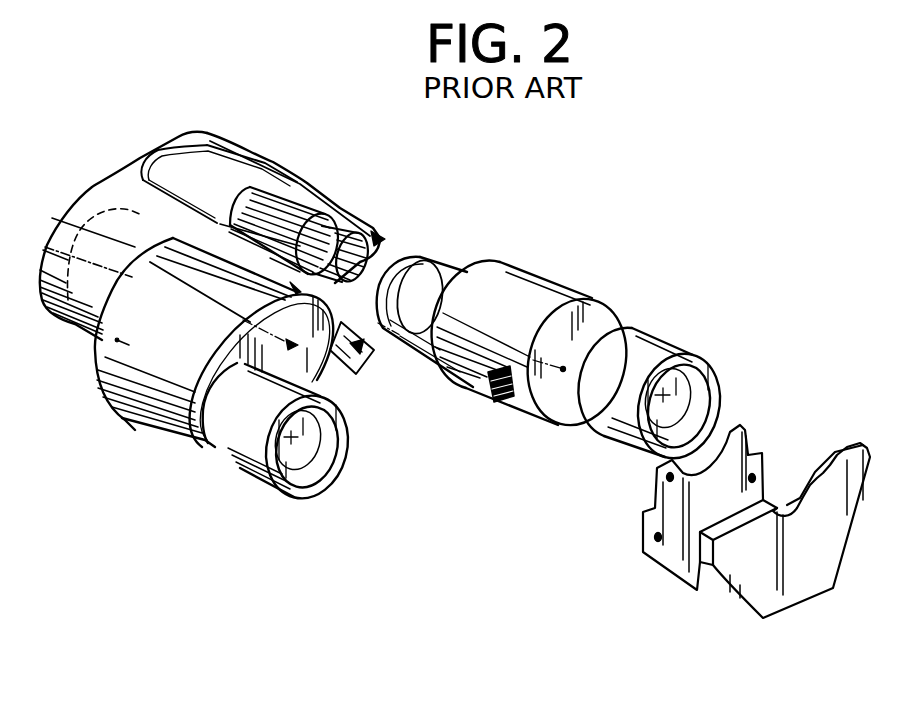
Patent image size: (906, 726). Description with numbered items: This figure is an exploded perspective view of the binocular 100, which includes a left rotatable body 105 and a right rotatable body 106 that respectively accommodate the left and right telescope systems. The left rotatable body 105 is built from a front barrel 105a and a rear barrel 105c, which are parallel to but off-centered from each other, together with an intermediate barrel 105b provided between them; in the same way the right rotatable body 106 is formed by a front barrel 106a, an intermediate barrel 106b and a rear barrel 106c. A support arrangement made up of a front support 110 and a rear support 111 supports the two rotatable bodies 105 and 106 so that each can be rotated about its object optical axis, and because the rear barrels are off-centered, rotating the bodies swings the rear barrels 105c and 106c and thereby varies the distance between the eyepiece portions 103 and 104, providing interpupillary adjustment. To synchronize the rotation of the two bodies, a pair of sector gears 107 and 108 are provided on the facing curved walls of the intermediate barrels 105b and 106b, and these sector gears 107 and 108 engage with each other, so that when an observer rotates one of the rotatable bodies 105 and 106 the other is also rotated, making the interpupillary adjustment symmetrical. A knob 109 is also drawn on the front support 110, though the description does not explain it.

The binocular 100 is at (347, 558).
The eyepiece portion 103 is at (311, 463).
The eyepiece portion 104 is at (691, 338).
The left rotatable body 105 is at (171, 373).
The front barrel 105a is at (72, 325).
The intermediate barrel 105b is at (158, 388).
The rear barrel 105c is at (243, 423).
The right rotatable body 106 is at (544, 318).
The front barrel 106a is at (453, 258).
The intermediate barrel 106b is at (577, 288).
The rear barrel 106c is at (635, 359).
The sector gear 107 is at (352, 355).
The sector gear 108 is at (493, 402).
The knob 109 is at (338, 175).
The front support 110 is at (92, 199).
The rear support 111 is at (667, 562).